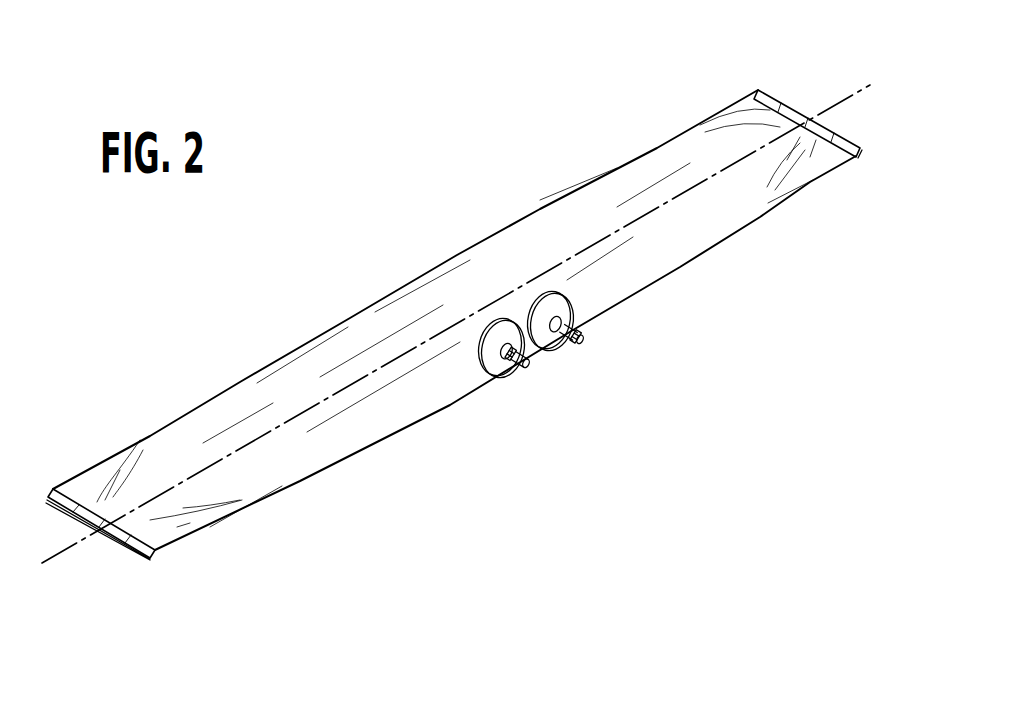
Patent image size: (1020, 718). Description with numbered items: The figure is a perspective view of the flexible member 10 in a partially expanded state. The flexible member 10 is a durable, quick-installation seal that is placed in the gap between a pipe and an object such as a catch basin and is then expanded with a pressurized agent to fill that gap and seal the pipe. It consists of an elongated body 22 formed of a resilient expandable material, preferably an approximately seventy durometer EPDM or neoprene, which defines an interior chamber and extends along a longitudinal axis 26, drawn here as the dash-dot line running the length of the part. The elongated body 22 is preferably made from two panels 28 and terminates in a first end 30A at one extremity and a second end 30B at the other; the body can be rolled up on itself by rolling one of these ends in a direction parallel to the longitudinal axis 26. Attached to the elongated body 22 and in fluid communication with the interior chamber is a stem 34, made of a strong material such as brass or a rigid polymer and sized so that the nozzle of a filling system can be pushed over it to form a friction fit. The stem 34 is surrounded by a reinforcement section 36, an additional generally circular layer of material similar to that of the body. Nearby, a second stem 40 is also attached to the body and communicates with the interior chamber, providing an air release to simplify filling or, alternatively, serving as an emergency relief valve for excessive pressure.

The flexible member 10 is at (456, 330).
The elongated body 22 is at (603, 236).
The longitudinal axis 26 is at (72, 548).
The panels 28 is at (312, 401).
The first end 30A is at (130, 551).
The second end 30B is at (773, 96).
The stem 34 is at (593, 388).
The reinforcement section 36 is at (495, 371).
The second stem 40 is at (590, 333).